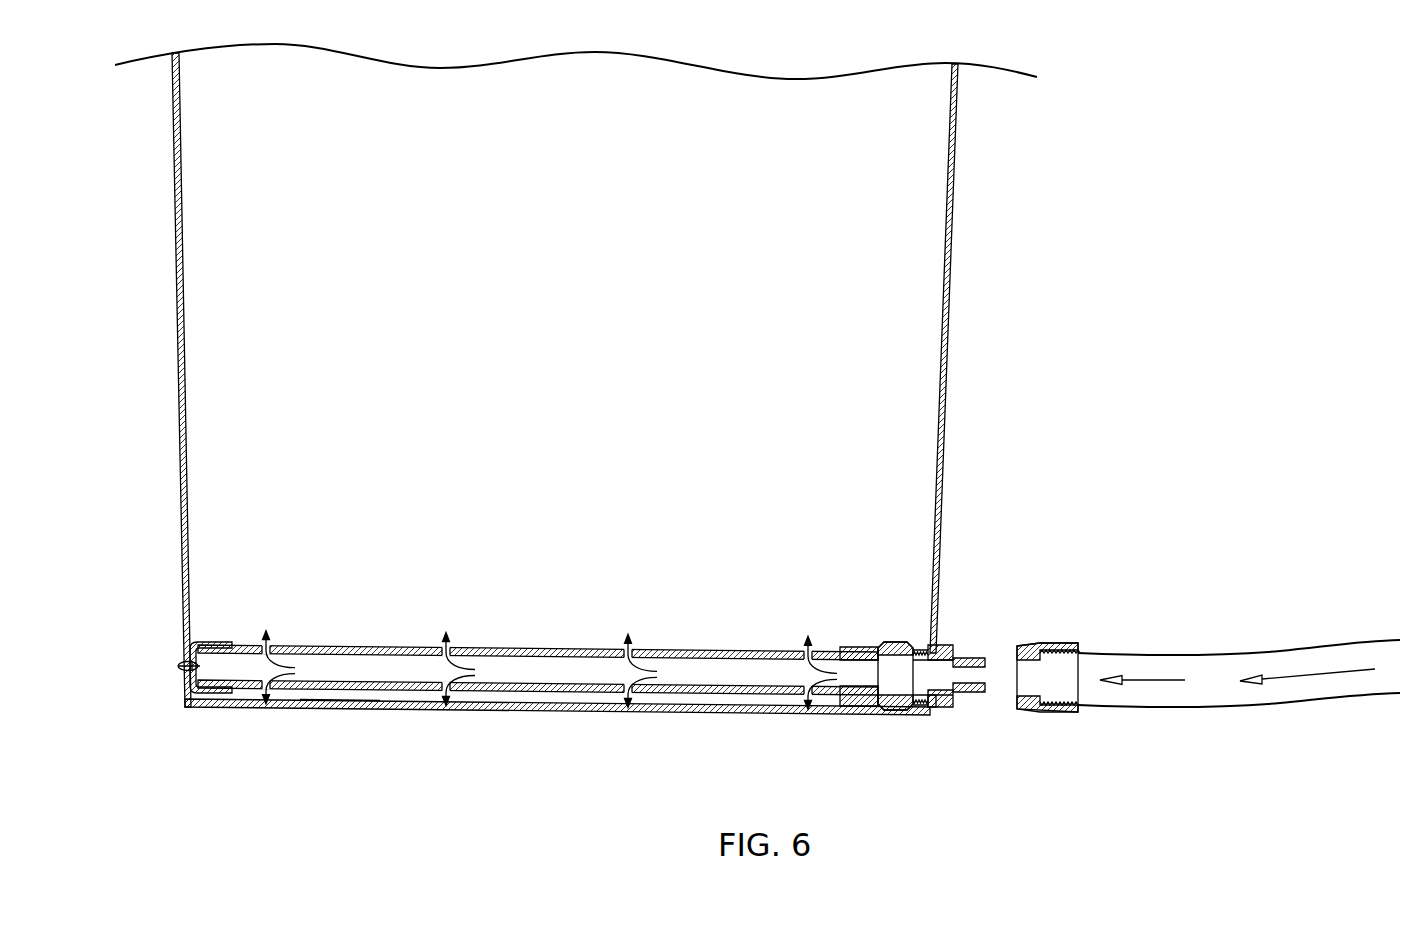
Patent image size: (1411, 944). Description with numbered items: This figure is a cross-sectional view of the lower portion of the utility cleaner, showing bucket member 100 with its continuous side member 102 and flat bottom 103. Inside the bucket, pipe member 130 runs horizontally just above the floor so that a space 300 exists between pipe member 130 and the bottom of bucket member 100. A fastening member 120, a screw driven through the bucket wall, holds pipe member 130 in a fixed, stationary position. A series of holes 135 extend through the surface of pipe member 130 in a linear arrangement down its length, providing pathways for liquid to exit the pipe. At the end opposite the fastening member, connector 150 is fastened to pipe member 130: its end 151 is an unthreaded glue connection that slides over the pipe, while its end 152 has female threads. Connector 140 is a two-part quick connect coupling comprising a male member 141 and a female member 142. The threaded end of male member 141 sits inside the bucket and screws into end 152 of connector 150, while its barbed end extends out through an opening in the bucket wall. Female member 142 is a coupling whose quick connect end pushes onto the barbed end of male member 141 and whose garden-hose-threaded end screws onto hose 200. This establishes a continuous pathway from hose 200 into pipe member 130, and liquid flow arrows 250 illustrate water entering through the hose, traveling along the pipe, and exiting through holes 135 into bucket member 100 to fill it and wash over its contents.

The bucket member 100 is at (975, 466).
The continuous side member 102 is at (960, 194).
The flat bottom 103 is at (527, 716).
The fastening member 120 is at (165, 695).
The pipe member 130 is at (540, 615).
The holes 135 is at (255, 615).
The connector 140 is at (1087, 615).
The male member 141 is at (970, 628).
The female member 142 is at (1052, 740).
The connector 150 is at (893, 612).
The end 151 is at (848, 730).
The end 152 is at (905, 740).
The hose 200 is at (1357, 615).
The liquid flow arrows 250 is at (650, 612).
The space 300 is at (329, 724).